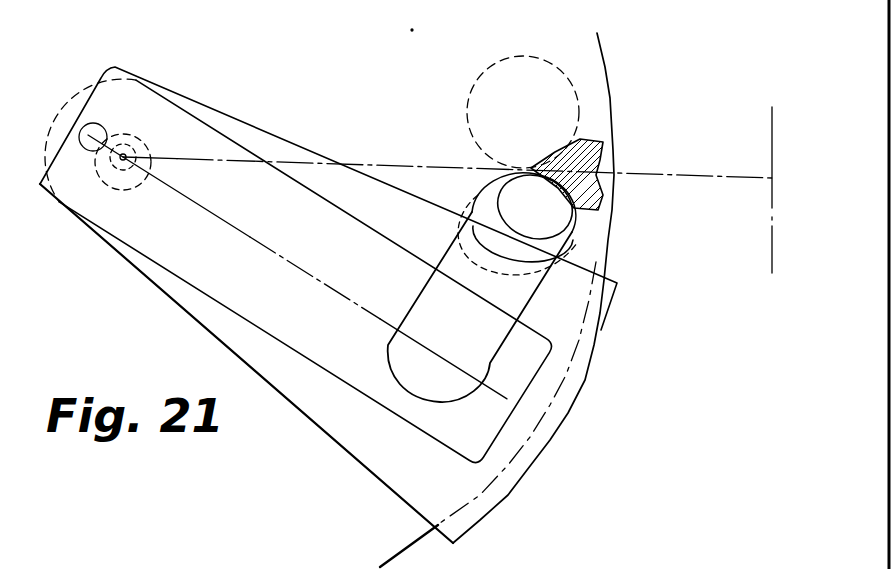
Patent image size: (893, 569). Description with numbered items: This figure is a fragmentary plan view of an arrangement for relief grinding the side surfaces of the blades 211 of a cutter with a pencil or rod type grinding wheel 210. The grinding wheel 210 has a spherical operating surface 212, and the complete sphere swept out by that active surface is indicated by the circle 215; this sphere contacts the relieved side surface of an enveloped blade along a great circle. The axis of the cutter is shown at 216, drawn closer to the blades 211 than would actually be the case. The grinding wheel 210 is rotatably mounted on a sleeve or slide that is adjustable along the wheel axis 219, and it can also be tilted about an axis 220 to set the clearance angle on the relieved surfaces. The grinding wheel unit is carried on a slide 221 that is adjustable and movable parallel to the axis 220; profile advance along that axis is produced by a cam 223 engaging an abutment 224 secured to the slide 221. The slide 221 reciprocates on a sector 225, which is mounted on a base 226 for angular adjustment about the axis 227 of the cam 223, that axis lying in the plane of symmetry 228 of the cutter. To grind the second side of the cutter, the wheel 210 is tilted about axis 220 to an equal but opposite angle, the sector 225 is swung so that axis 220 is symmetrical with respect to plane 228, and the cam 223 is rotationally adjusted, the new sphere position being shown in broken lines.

The grinding wheel 210 is at (527, 297).
The blades 211 is at (600, 148).
The spherical operating surface 212 is at (572, 238).
The sphere 215 is at (490, 217).
The cutter axis 216 is at (770, 258).
The wheel axis 219 is at (462, 310).
The tilt axis 220 is at (336, 291).
The slide 221 is at (363, 373).
The cam 223 is at (127, 190).
The abutment 224 is at (96, 124).
The sector 225 is at (520, 463).
The base 226 is at (404, 548).
The cam axis 227 is at (135, 152).
The plane of symmetry 228 is at (352, 163).